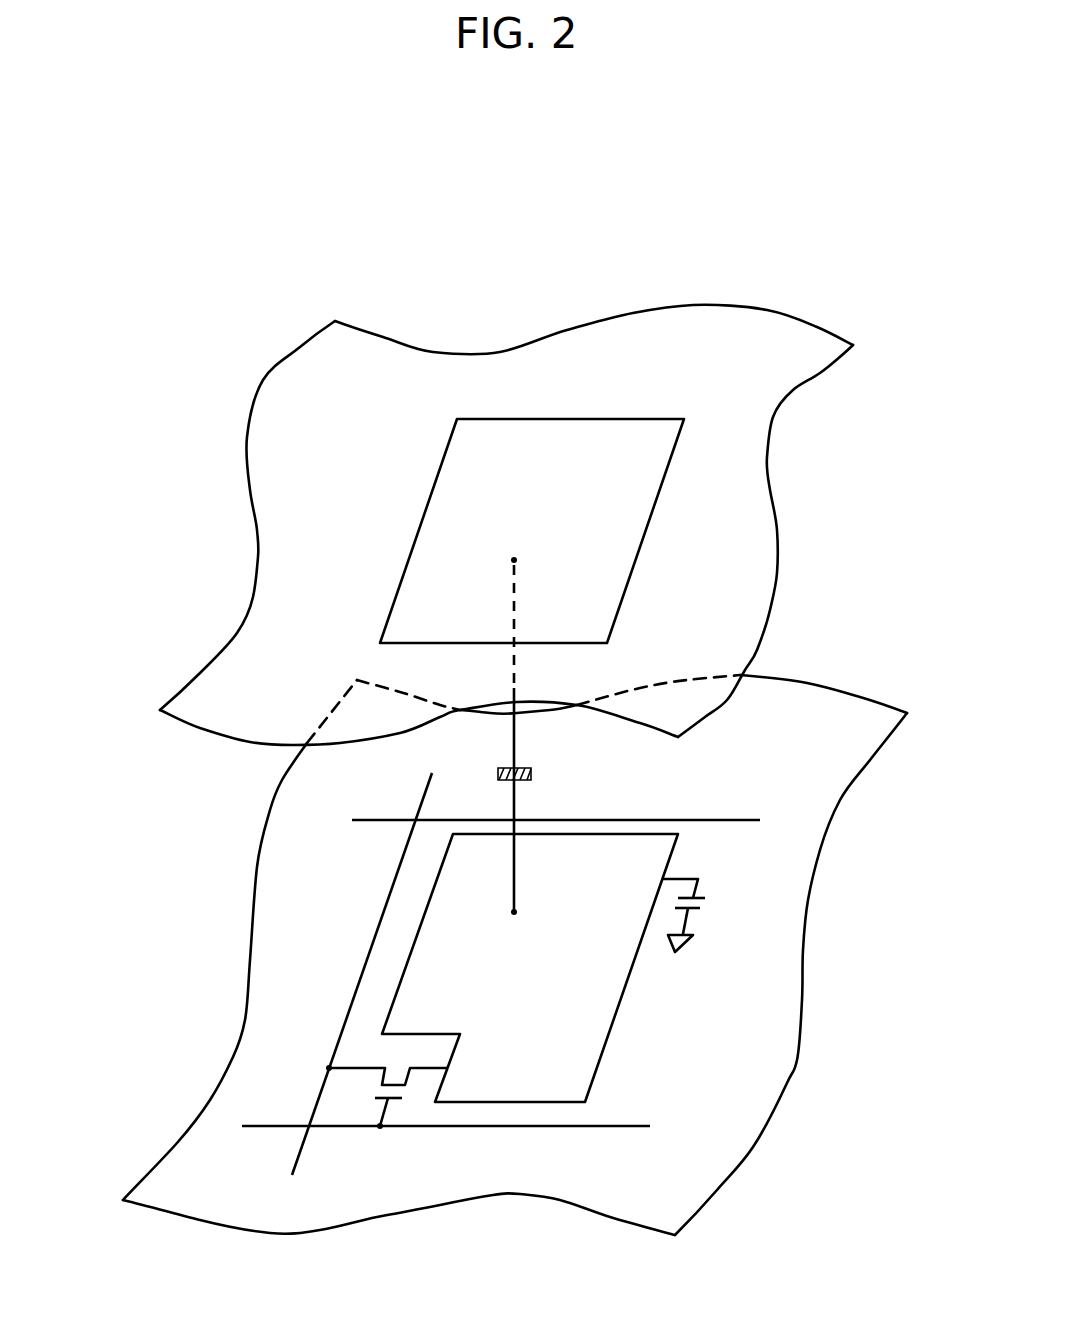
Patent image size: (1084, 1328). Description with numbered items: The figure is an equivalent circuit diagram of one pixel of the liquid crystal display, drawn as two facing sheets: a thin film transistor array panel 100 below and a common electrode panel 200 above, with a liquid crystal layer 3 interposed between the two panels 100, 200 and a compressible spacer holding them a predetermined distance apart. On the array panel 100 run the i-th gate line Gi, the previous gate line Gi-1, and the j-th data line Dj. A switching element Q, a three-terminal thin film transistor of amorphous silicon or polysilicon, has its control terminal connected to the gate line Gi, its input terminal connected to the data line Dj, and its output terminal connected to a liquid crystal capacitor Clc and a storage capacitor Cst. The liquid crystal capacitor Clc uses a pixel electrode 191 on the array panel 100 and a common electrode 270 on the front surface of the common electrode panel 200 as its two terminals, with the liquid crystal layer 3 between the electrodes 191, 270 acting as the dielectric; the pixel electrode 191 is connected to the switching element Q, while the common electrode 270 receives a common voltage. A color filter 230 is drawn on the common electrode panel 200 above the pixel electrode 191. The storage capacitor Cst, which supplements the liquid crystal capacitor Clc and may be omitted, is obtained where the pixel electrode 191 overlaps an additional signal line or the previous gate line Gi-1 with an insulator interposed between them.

The liquid crystal layer 3 is at (157, 839).
The thin film transistor array panel 100 is at (812, 927).
The pixel electrode 191 is at (613, 1025).
The common electrode panel 200 is at (536, 525).
The color filter 230 is at (640, 547).
The common electrode 270 is at (767, 490).
The switching element Q is at (386, 1097).
The liquid crystal capacitor Clc is at (547, 736).
The storage capacitor Cst is at (704, 915).
The data line Dj is at (362, 973).
The gate line Gi is at (444, 1106).
The previous gate line Gi-1 is at (539, 841).